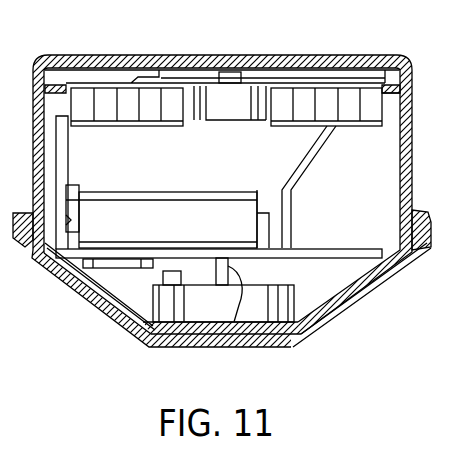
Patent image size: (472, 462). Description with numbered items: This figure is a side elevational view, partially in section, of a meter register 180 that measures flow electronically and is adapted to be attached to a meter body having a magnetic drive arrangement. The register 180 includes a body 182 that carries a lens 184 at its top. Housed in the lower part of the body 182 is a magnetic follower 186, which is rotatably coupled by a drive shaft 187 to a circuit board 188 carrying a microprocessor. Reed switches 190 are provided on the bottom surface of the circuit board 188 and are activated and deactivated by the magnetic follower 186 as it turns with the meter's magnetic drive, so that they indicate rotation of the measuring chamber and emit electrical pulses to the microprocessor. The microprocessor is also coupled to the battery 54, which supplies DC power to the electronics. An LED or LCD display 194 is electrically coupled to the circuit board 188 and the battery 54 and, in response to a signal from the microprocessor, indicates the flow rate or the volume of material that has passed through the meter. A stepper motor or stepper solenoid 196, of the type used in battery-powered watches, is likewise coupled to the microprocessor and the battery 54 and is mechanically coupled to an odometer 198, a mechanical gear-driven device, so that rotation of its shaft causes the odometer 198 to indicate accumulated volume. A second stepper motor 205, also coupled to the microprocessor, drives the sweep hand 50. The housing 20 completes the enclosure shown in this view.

The housing 20 is at (410, 117).
The sweep hand 50 is at (156, 78).
The battery 54 is at (172, 192).
The meter register 180 is at (348, 324).
The body 182 is at (20, 247).
The lens 184 is at (253, 66).
The magnetic follower 186 is at (197, 300).
The drive shaft 187 is at (238, 305).
The circuit board 188 is at (338, 248).
The reed switches 190 is at (95, 308).
The LED or LCD display 194 is at (103, 90).
The stepper motor or stepper solenoid 196 is at (386, 100).
The odometer 198 is at (328, 84).
The second stepper motor 205 is at (222, 97).